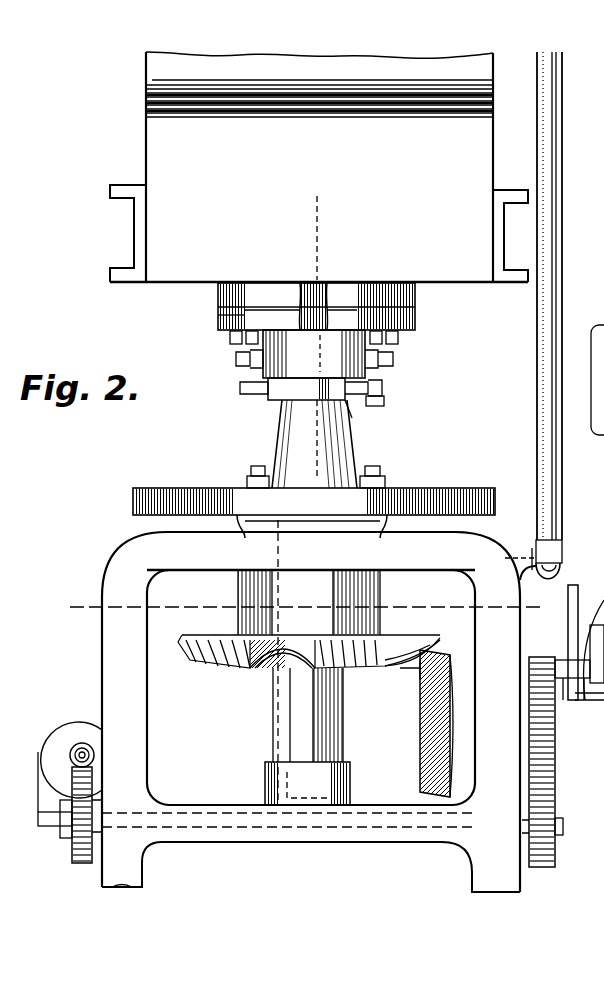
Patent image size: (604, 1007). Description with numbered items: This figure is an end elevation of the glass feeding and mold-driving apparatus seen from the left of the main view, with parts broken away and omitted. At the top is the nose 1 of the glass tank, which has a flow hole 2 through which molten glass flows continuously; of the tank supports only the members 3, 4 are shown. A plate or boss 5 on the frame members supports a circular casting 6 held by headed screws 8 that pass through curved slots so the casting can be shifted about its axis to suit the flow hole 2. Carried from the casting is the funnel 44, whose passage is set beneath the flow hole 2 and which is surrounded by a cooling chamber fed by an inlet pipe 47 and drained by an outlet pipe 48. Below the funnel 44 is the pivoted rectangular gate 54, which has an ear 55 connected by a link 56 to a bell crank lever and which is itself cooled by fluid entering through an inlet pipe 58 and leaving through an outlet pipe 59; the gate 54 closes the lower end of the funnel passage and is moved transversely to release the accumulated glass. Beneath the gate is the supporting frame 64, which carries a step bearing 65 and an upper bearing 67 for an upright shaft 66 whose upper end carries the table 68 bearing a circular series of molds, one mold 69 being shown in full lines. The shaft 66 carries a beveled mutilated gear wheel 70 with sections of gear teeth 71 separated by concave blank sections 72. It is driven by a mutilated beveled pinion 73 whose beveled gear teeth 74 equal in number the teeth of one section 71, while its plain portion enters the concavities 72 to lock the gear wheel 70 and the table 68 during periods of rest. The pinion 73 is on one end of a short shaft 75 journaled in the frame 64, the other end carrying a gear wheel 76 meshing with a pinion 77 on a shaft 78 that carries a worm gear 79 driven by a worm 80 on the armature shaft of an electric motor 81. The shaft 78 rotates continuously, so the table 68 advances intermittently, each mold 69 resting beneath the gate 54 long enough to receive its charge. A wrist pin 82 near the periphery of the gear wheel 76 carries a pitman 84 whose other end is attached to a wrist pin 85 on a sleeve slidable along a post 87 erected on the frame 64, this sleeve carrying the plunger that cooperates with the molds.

The nose 1 is at (319, 167).
The flow hole 2 is at (324, 282).
The support member 3 is at (309, 609).
The support member 4 is at (317, 336).
The plate or boss 5 is at (250, 292).
The casting 6 is at (218, 320).
The headed screws 8 is at (230, 338).
The funnel 44 is at (314, 354).
The inlet pipe 47 is at (393, 360).
The outlet pipe 48 is at (236, 360).
The gate 54 is at (290, 394).
The ear 55 is at (382, 388).
The link 56 is at (384, 402).
The inlet pipe 58 is at (352, 418).
The outlet pipe 59 is at (240, 388).
The supporting frame 64 is at (112, 665).
The step bearing 65 is at (266, 781).
The upright shaft 66 is at (290, 738).
The bearing 67 is at (309, 660).
The table 68 is at (455, 500).
The mold 69 is at (285, 452).
The gear wheel 70 is at (385, 632).
The sections of gear teeth 71 is at (222, 662).
The blank sections 72 is at (290, 655).
The beveled pinion 73 is at (426, 738).
The beveled gear teeth 74 is at (418, 680).
The short shaft 75 is at (563, 827).
The gear wheel 76 is at (545, 755).
The pinion 77 is at (555, 848).
The shaft 78 is at (40, 826).
The worm gear 79 is at (72, 855).
The worm 80 is at (70, 752).
The electric motor 81 is at (64, 728).
The wrist pin 82 is at (579, 694).
The pitman 84 is at (568, 636).
The wrist pin 85 is at (594, 640).
The post 87 is at (540, 386).